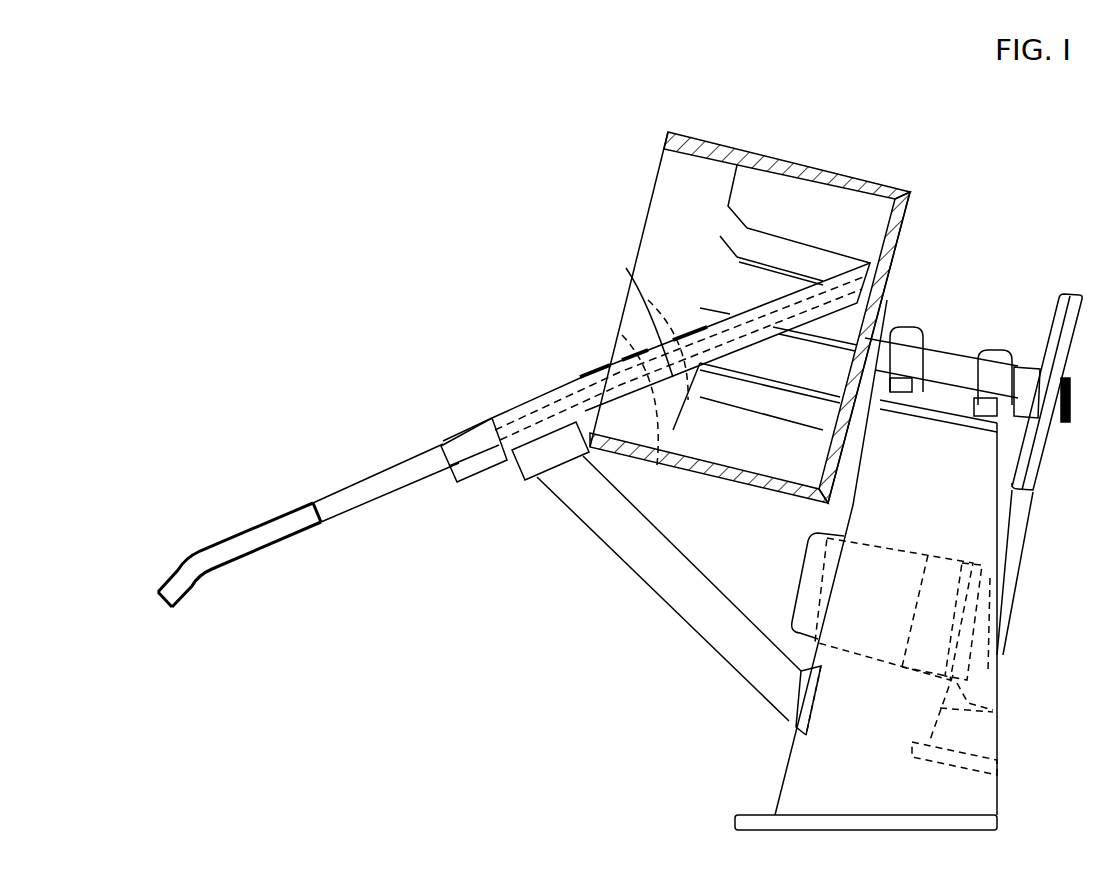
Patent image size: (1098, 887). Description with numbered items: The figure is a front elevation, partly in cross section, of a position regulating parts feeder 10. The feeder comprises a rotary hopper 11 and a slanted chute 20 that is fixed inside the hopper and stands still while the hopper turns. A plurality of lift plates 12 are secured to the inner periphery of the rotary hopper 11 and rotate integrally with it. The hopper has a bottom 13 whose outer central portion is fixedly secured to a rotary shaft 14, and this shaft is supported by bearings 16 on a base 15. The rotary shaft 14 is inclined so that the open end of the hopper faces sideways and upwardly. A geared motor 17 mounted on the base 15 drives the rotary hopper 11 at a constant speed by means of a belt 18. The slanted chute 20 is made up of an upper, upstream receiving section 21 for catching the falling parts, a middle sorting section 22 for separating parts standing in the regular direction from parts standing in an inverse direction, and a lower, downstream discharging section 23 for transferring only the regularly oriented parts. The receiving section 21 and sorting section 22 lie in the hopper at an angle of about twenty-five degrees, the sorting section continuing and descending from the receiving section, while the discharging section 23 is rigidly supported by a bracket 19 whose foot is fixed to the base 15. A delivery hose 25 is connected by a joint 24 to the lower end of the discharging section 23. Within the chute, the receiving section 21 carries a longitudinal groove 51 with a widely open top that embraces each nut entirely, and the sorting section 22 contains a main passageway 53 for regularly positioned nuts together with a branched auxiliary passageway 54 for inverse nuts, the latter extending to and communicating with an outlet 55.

The parts feeder 10 is at (622, 186).
The rotary hopper 11 is at (812, 170).
The lift plates 12 is at (768, 190).
The bottom 13 is at (888, 233).
The rotary shaft 14 is at (952, 344).
The base 15 is at (797, 762).
The bearings 16 is at (905, 344).
The geared motor 17 is at (815, 580).
The belt 18 is at (1038, 502).
The bracket 19 is at (696, 598).
The slanted chute 20 is at (590, 366).
The receiving section 21 is at (782, 302).
The sorting section 22 is at (626, 268).
The discharging section 23 is at (540, 420).
The joint 24 is at (470, 442).
The delivery hose 25 is at (268, 515).
The longitudinal groove 51 is at (770, 327).
The main passageway 53 is at (614, 336).
The branched auxiliary passageway 54 is at (705, 396).
The outlet 55 is at (680, 450).